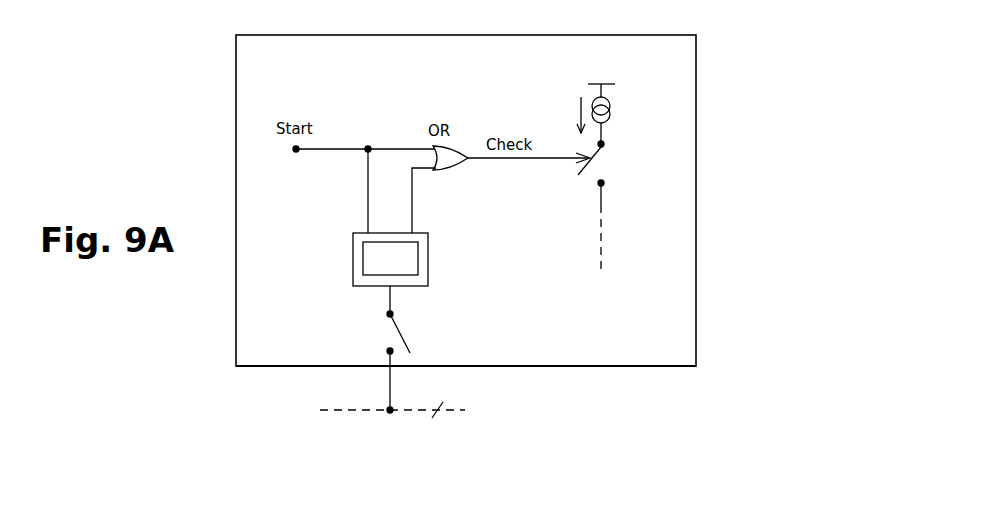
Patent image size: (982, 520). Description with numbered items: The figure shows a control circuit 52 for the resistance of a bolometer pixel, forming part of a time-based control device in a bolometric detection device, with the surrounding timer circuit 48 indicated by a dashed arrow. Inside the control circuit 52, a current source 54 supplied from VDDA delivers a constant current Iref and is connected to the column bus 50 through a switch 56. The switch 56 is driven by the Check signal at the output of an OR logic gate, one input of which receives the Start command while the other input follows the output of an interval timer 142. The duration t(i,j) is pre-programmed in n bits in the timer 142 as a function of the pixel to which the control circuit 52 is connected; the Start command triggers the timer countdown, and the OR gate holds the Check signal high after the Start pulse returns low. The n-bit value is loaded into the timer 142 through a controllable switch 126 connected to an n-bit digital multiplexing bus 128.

The timer circuit 48 is at (697, 290).
The control circuit 52 is at (582, 35).
The current source 54 is at (614, 110).
The switch 56 is at (588, 166).
The column bus 50 is at (601, 203).
The interval timer 142 is at (418, 263).
The controllable switch 126 is at (403, 336).
The n-bit digital multiplexing bus 128 is at (350, 411).